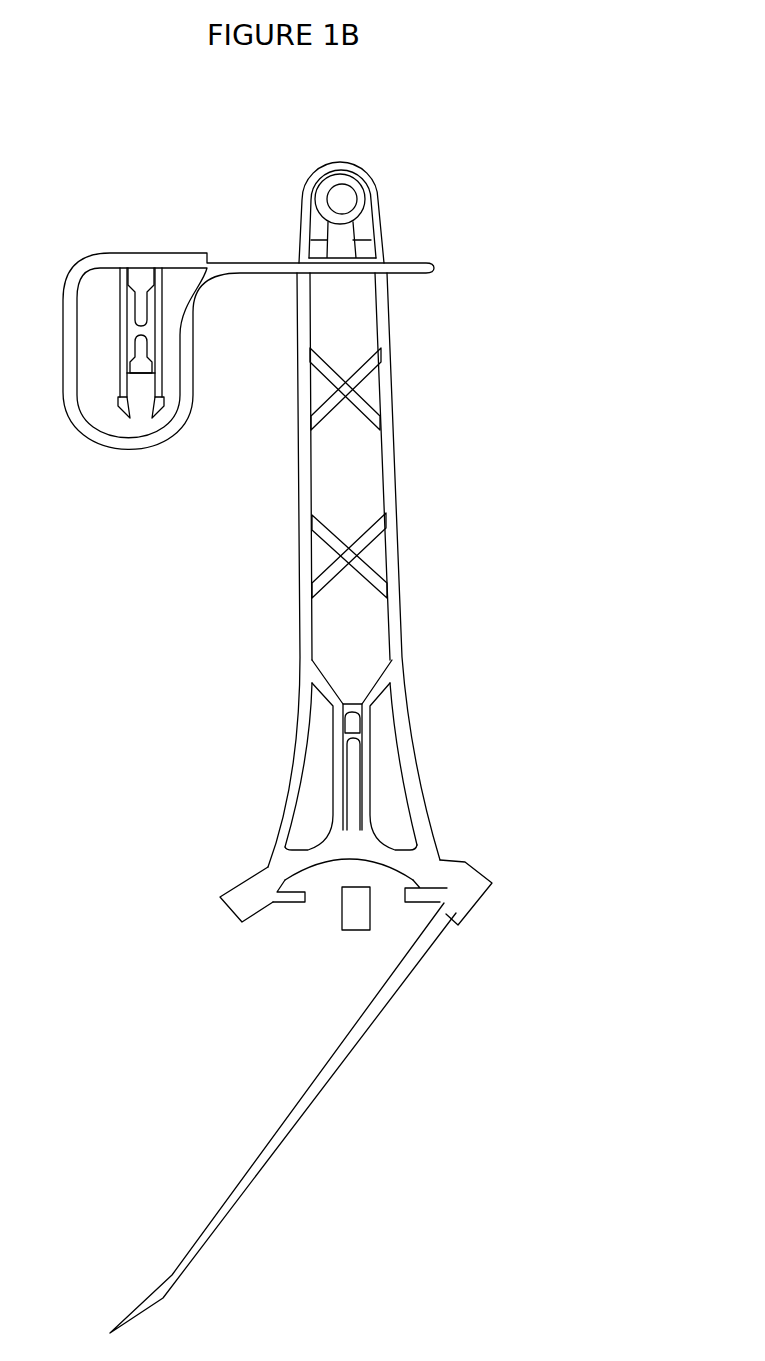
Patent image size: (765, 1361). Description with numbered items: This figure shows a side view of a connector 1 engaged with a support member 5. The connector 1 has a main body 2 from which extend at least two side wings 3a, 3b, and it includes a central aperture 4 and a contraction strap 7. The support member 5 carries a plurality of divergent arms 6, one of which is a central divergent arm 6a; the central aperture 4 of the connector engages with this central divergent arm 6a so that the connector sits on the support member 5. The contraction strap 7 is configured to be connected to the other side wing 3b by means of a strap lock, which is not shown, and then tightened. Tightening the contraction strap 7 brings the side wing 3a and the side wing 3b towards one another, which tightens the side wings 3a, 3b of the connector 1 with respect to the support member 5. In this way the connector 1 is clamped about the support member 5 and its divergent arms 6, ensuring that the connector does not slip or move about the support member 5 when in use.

The connector 1 is at (507, 398).
The main body 2 is at (395, 647).
The side wing 3a is at (467, 890).
The side wing 3b is at (243, 893).
The central aperture 4 is at (354, 723).
The support member 5 is at (358, 863).
The divergent arms 6 is at (407, 882).
The central divergent arm 6a is at (356, 753).
The contraction strap 7 is at (286, 1143).